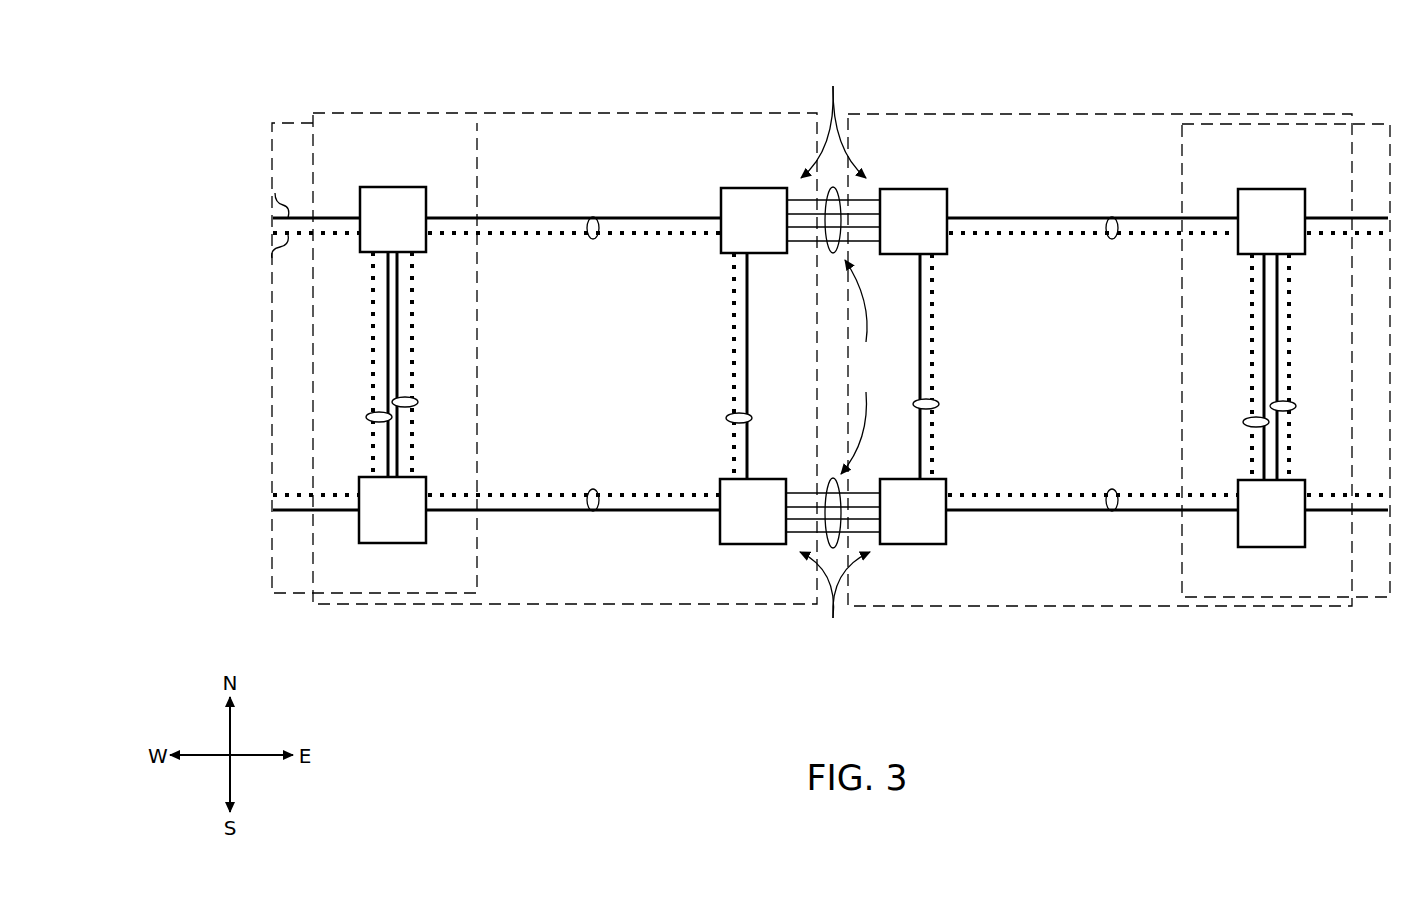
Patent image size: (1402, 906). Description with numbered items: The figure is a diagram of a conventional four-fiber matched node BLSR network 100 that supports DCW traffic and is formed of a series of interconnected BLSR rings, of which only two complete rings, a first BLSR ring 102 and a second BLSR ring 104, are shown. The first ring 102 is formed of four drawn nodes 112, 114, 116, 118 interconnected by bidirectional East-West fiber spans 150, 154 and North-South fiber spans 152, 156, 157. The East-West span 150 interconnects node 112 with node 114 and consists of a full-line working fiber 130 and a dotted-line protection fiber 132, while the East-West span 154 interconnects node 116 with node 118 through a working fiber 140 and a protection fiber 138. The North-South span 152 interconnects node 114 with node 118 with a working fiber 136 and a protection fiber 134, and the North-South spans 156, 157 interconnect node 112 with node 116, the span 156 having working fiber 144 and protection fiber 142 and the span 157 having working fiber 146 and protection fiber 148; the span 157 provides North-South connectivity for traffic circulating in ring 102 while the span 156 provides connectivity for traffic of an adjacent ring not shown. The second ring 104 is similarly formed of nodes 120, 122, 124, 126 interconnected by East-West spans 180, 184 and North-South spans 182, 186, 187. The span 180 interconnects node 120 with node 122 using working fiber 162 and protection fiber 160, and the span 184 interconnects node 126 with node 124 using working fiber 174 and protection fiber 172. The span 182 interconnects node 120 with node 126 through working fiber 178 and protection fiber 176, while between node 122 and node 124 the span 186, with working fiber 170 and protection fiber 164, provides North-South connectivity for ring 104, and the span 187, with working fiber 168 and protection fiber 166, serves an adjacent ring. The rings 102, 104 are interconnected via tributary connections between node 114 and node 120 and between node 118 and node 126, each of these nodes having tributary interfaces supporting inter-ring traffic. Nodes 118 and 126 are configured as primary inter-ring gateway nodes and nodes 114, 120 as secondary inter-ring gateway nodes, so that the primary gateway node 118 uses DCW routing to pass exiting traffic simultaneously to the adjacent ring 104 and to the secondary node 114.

The BLSR network 100 is at (762, 397).
The first BLSR ring 102 is at (543, 604).
The second BLSR ring 104 is at (1045, 607).
The node 112 is at (390, 187).
The node 114 is at (751, 188).
The node 116 is at (390, 543).
The node 118 is at (750, 544).
The node 120 is at (911, 189).
The node 122 is at (1264, 189).
The node 124 is at (1265, 547).
The node 126 is at (910, 544).
The working fiber 130 is at (497, 218).
The protection fiber 132 is at (523, 236).
The protection fiber 134 is at (731, 270).
The working fiber 136 is at (732, 338).
The protection fiber 138 is at (490, 493).
The working fiber 140 is at (520, 512).
The protection fiber 142 is at (373, 270).
The working fiber 144 is at (371, 339).
The working fiber 146 is at (412, 339).
The protection fiber 148 is at (415, 270).
The East-West fiber span 150 is at (593, 217).
The North-South fiber span 152 is at (726, 418).
The East-West fiber span 154 is at (594, 512).
The North-South fiber span 156 is at (366, 418).
The North-South fiber span 157 is at (418, 402).
The protection fiber 160 is at (1038, 237).
The working fiber 162 is at (1019, 219).
The protection fiber 164 is at (1250, 270).
The protection fiber 166 is at (1292, 270).
The working fiber 168 is at (1292, 337).
The working fiber 170 is at (1250, 339).
The protection fiber 172 is at (1010, 493).
The working fiber 174 is at (1038, 512).
The protection fiber 176 is at (935, 270).
The working fiber 178 is at (935, 338).
The East-West span 180 is at (1113, 217).
The North-South span 182 is at (940, 404).
The East-West span 184 is at (1113, 512).
The North-South span 186 is at (1243, 420).
The North-South span 187 is at (1296, 404).